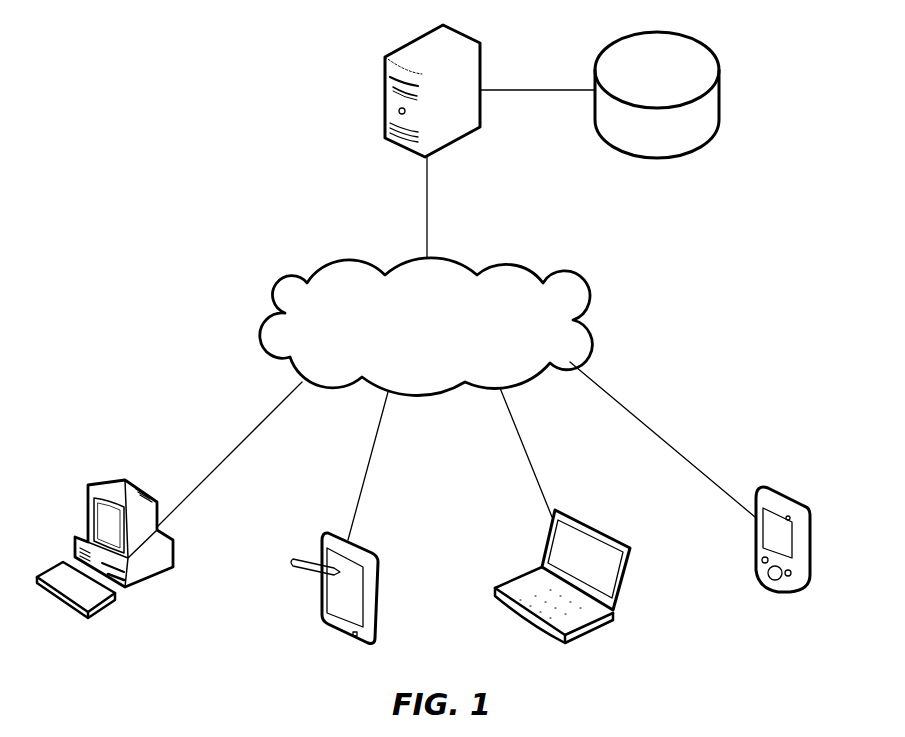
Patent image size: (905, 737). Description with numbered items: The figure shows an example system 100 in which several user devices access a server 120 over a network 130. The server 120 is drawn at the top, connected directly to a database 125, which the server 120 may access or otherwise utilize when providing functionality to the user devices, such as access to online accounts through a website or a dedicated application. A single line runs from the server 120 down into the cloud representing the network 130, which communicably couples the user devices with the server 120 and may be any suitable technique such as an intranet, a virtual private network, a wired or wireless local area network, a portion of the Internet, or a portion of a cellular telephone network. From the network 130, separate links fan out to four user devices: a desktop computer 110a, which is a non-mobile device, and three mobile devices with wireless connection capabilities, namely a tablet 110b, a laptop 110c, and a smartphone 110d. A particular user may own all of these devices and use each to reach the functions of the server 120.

The system 100 is at (150, 76).
The server 120 is at (381, 48).
The database 125 is at (712, 38).
The network 130 is at (426, 327).
The desktop computer 110a is at (86, 474).
The tablet 110b is at (311, 516).
The laptop 110c is at (613, 516).
The smartphone 110d is at (793, 485).